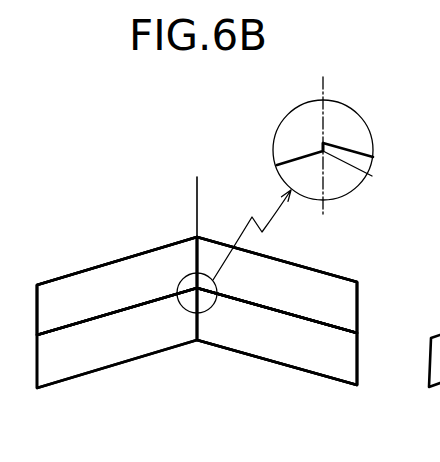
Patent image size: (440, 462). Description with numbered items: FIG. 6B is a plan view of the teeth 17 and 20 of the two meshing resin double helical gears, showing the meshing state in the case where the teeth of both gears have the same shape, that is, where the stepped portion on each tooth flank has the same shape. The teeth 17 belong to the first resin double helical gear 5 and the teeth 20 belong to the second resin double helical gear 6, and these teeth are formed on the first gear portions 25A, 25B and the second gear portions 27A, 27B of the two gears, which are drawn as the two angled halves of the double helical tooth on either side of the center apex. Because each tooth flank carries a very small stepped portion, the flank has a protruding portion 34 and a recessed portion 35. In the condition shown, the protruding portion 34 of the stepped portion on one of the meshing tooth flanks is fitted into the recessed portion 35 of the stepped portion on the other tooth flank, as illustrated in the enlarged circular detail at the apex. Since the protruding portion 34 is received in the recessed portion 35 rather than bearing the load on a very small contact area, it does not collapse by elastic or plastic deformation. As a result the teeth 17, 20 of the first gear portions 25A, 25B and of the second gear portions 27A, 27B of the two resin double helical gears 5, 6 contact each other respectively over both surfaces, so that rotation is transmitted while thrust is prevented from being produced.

The first resin double helical gear 5 is at (72, 391).
The second resin double helical gear 6 is at (103, 253).
The teeth 17 is at (249, 353).
The teeth 20 is at (152, 258).
The first gear portion 25A is at (155, 348).
The first gear portion 25B is at (70, 302).
The second gear portion 27A is at (298, 353).
The second gear portion 27B is at (325, 282).
The protruding portion 34 is at (325, 147).
The recessed portion 35 is at (372, 176).